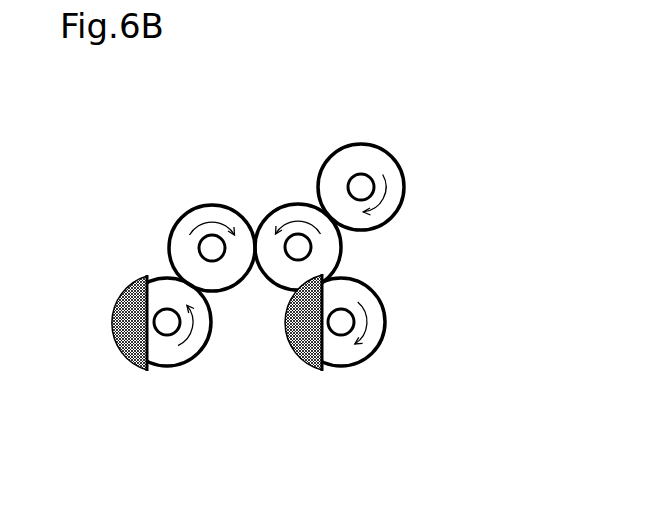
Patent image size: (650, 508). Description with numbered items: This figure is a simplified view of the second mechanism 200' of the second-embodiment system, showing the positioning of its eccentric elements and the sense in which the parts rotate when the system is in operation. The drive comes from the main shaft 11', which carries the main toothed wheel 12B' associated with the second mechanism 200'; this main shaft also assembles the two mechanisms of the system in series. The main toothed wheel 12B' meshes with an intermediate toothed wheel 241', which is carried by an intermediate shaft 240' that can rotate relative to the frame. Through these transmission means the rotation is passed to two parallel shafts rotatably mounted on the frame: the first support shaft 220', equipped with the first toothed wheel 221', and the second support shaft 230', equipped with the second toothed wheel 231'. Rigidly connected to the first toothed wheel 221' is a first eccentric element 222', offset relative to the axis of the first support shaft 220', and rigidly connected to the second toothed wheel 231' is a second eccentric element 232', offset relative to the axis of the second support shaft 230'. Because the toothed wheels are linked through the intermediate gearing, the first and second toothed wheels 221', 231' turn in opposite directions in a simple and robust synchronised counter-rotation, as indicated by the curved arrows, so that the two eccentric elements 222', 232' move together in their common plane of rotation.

The second mechanism 200' is at (265, 275).
The main shaft 11' is at (368, 155).
The main toothed wheel 12B' is at (347, 162).
The intermediate shaft 240' is at (182, 179).
The intermediate toothed wheel 241' is at (213, 194).
The first support shaft 220' is at (187, 380).
The first toothed wheel 221' is at (198, 366).
The first eccentric element 222' is at (136, 365).
The second support shaft 230' is at (365, 378).
The second toothed wheel 231' is at (382, 366).
The second eccentric element 232' is at (313, 364).